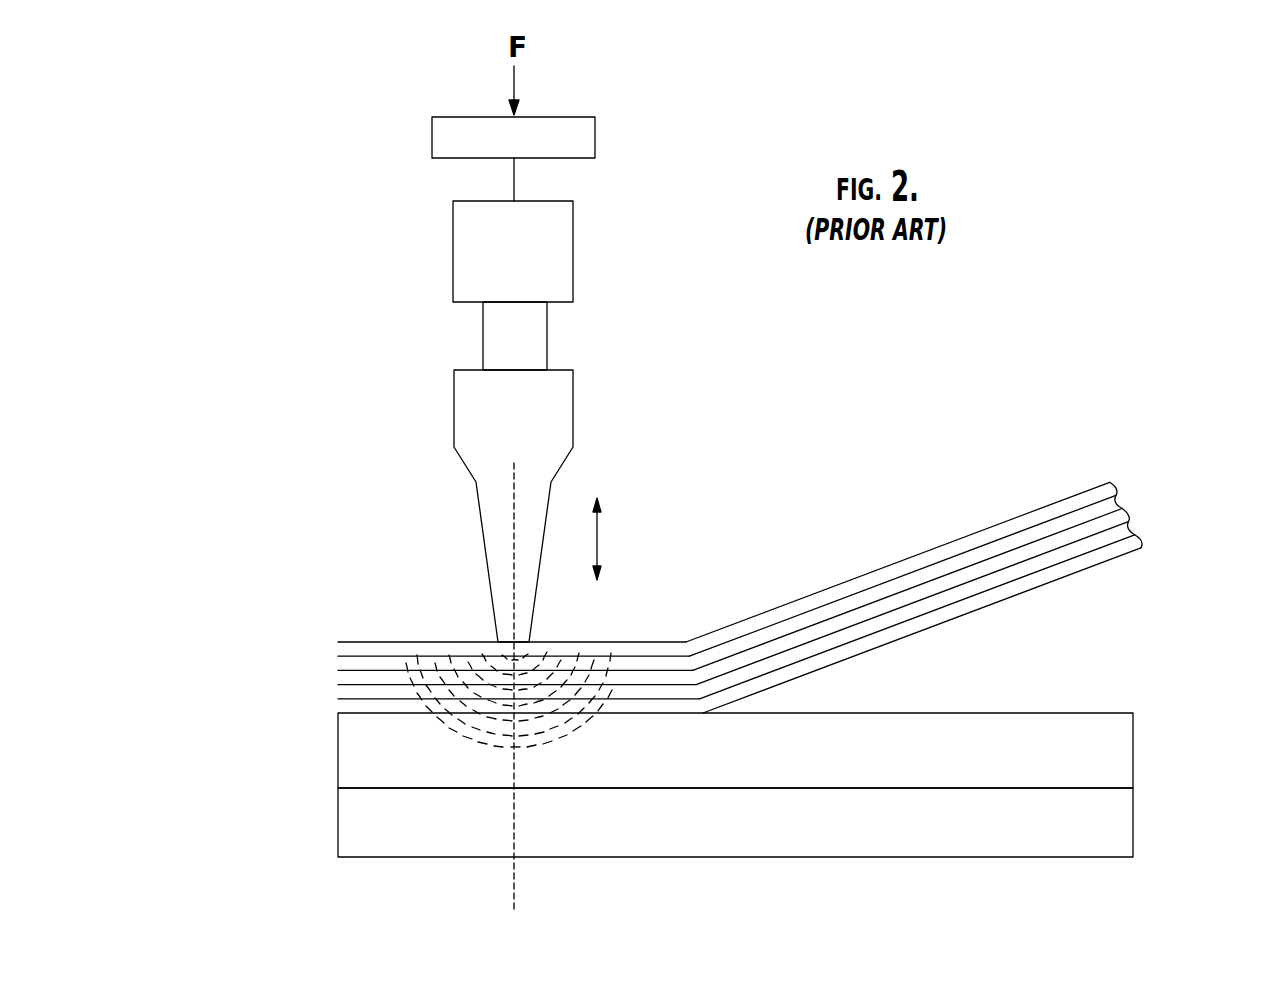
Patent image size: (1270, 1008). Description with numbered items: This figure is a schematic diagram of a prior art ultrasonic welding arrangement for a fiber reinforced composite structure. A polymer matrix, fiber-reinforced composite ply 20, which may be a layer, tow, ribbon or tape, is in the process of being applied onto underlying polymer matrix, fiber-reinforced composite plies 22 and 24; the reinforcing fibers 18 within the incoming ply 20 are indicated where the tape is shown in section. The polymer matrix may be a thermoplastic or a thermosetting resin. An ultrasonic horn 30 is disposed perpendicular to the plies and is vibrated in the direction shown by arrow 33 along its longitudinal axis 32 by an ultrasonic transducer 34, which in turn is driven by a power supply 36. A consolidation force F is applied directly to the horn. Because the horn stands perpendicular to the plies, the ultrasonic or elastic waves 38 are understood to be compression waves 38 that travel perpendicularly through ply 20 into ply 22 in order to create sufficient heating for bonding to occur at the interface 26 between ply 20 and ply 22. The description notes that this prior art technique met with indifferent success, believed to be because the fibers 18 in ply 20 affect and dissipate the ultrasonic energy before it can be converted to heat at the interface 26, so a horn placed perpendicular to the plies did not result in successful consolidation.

The fibers / tows of composite tape 18 is at (1017, 530).
The fiber reinforced composite ply 20 is at (1128, 510).
The fiber reinforced composite ply 22 is at (1116, 743).
The fiber reinforced composite ply 24 is at (1111, 821).
The interface 26 is at (338, 713).
The ultrasonic horn 30 is at (573, 408).
The longitudinal axis 32 is at (514, 893).
The arrow 33 is at (597, 531).
The ultrasonic transducer 34 is at (573, 252).
The power supply 36 is at (595, 140).
The compression waves 38 is at (545, 662).